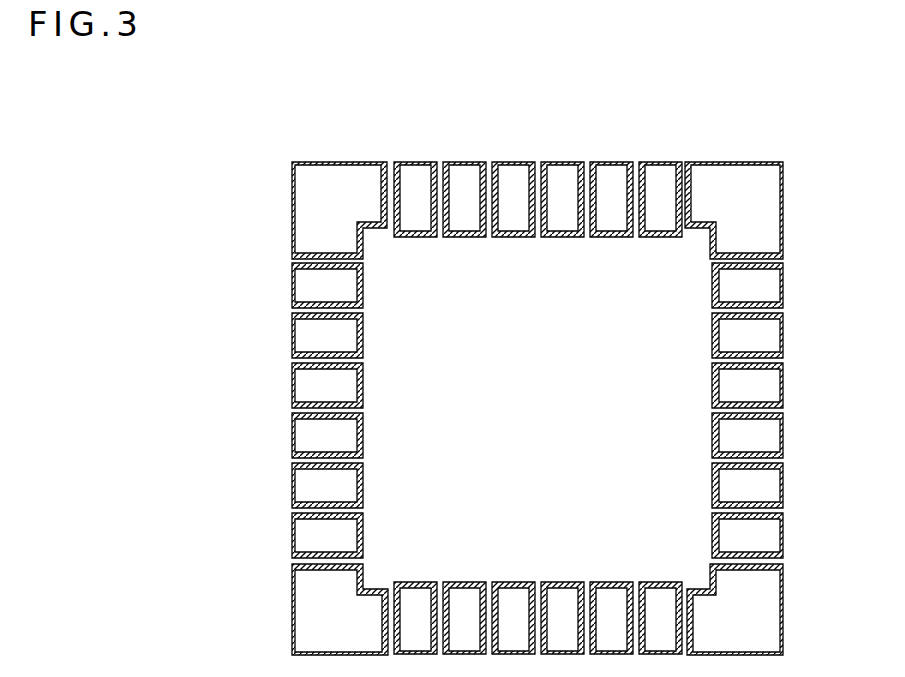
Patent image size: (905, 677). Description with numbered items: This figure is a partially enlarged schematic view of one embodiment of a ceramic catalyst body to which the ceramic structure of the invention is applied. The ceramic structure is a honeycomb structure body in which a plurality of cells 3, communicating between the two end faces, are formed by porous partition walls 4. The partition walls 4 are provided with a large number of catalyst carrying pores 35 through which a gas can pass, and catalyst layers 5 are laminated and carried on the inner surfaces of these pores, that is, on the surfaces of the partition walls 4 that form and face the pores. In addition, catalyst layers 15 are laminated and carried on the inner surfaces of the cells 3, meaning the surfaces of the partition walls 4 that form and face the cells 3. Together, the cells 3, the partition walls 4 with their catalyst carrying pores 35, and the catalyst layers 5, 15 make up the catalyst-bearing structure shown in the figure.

The cell 3 is at (667, 287).
The partition wall 4 is at (510, 180).
The catalyst layer 5 is at (754, 448).
The catalyst layer 15 is at (358, 340).
The catalyst layer carrying pore 35 is at (323, 503).